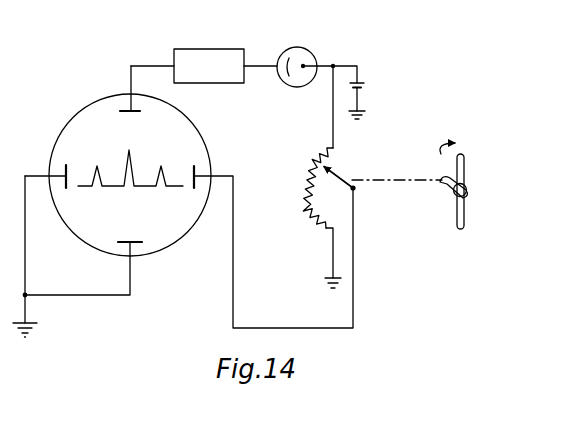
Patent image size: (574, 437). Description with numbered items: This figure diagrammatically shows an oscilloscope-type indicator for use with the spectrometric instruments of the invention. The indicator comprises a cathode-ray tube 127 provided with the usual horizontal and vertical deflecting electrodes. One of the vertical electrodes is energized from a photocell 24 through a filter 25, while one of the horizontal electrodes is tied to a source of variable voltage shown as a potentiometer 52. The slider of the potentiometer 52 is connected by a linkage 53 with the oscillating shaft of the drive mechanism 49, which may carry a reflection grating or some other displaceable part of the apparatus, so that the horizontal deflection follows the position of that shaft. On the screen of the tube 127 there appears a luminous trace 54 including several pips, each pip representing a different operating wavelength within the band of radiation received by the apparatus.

The cathode-ray tube 127 is at (68, 121).
The luminous trace 54 is at (175, 187).
The filter 25 is at (211, 49).
The photocell 24 is at (302, 52).
The potentiometer 52 is at (312, 211).
The linkage 53 is at (383, 178).
The drive mechanism 49 is at (449, 203).